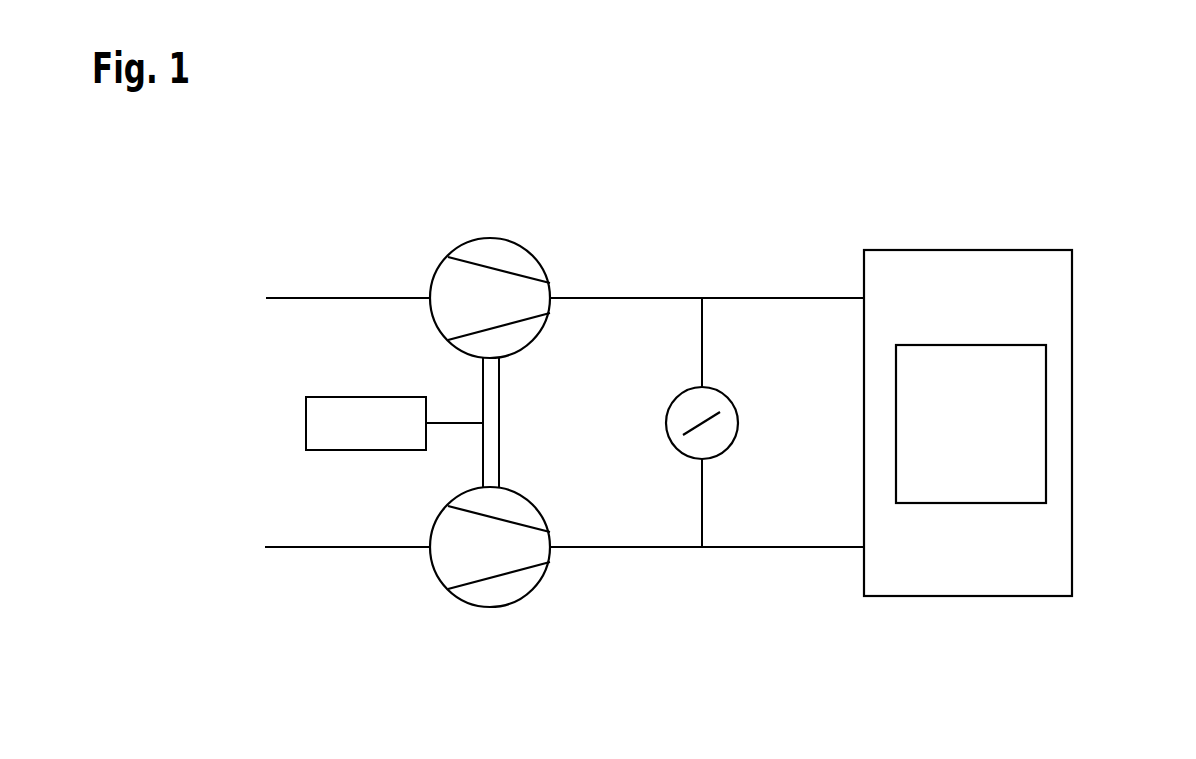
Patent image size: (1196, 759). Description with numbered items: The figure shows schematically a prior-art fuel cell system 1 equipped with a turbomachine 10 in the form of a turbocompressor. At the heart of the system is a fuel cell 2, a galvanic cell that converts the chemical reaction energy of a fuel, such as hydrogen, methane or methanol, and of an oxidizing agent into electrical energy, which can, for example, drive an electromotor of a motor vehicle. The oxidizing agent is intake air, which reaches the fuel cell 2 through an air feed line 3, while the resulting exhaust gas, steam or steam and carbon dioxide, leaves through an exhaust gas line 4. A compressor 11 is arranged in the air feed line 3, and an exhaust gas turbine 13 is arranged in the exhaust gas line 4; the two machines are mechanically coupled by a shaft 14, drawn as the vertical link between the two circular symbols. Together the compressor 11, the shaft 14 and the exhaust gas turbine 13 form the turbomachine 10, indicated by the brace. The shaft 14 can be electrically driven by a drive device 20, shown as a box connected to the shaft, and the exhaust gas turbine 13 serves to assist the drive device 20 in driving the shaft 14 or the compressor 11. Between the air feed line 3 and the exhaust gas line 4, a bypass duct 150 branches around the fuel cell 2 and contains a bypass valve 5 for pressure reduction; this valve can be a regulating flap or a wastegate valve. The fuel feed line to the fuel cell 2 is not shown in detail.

The fuel cell system 1 is at (1098, 187).
The fuel cell 2 is at (1046, 465).
The air feed line 3 is at (345, 298).
The exhaust gas line 4 is at (343, 547).
The bypass valve 5 is at (738, 423).
The turbomachine 10 is at (553, 302).
The compressor 11 is at (503, 238).
The exhaust gas turbine 13 is at (500, 607).
The shaft 14 is at (483, 380).
The drive device 20 is at (306, 416).
The bypass duct 150 is at (702, 340).